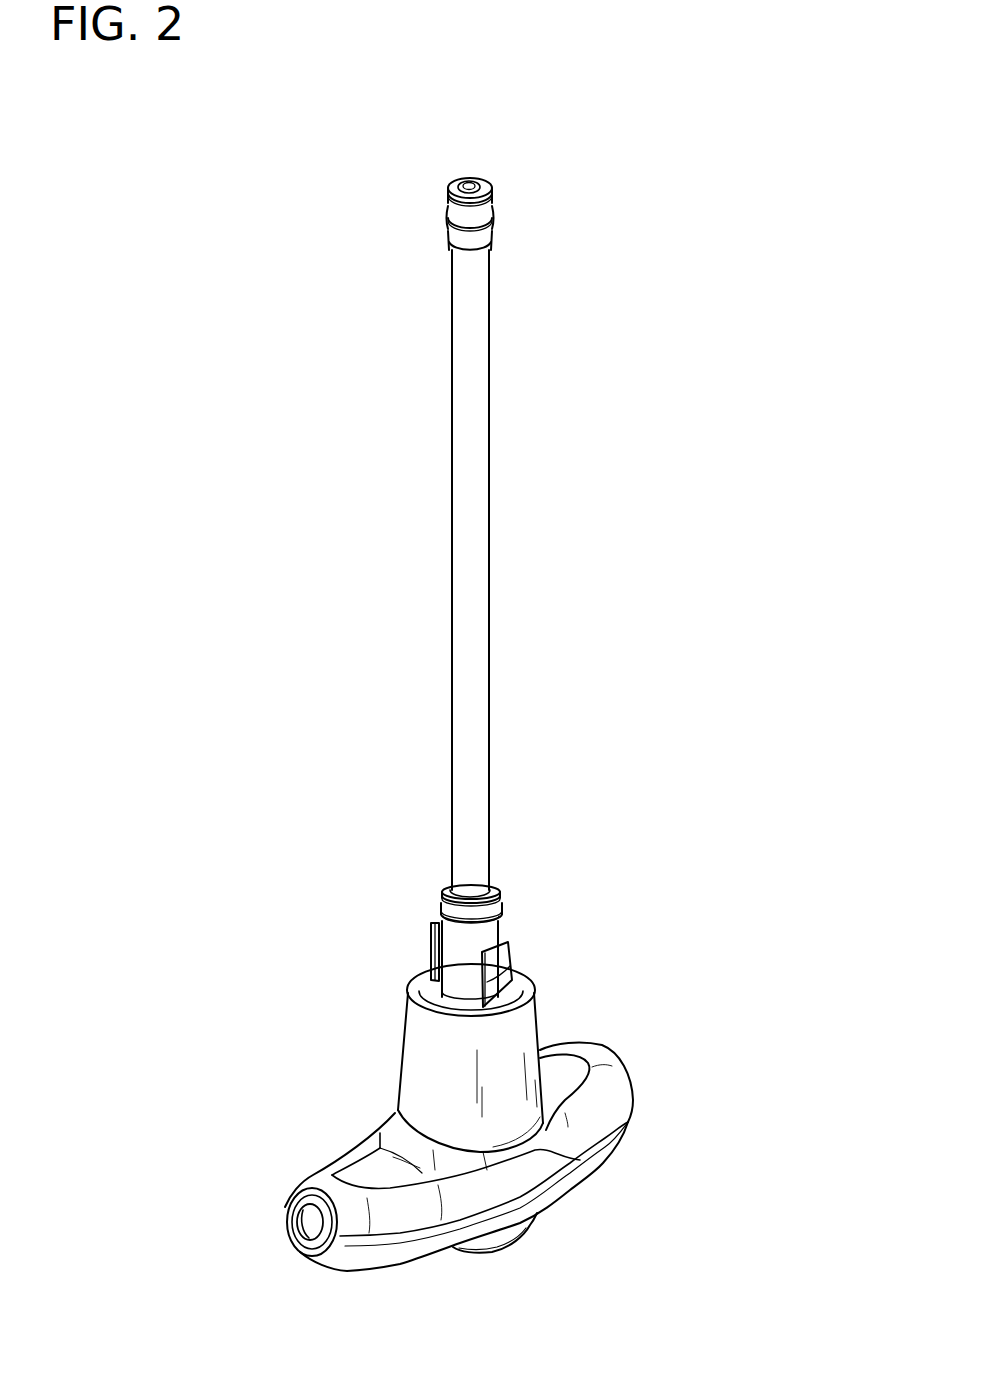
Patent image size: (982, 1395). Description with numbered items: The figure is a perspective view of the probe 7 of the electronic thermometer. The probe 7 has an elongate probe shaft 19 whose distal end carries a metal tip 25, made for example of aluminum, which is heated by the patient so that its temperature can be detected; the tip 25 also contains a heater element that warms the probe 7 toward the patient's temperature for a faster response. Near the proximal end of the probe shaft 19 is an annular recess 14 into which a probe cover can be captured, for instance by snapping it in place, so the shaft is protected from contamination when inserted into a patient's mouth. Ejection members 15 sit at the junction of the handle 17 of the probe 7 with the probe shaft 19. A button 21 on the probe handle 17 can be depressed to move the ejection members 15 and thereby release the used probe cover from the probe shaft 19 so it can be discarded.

The probe 7 is at (741, 296).
The metal tip 25 is at (478, 178).
The probe shaft 19 is at (451, 422).
The annular recess 14 is at (440, 896).
The ejection members 15 is at (430, 946).
The handle 17 is at (566, 1156).
The button 21 is at (502, 1247).